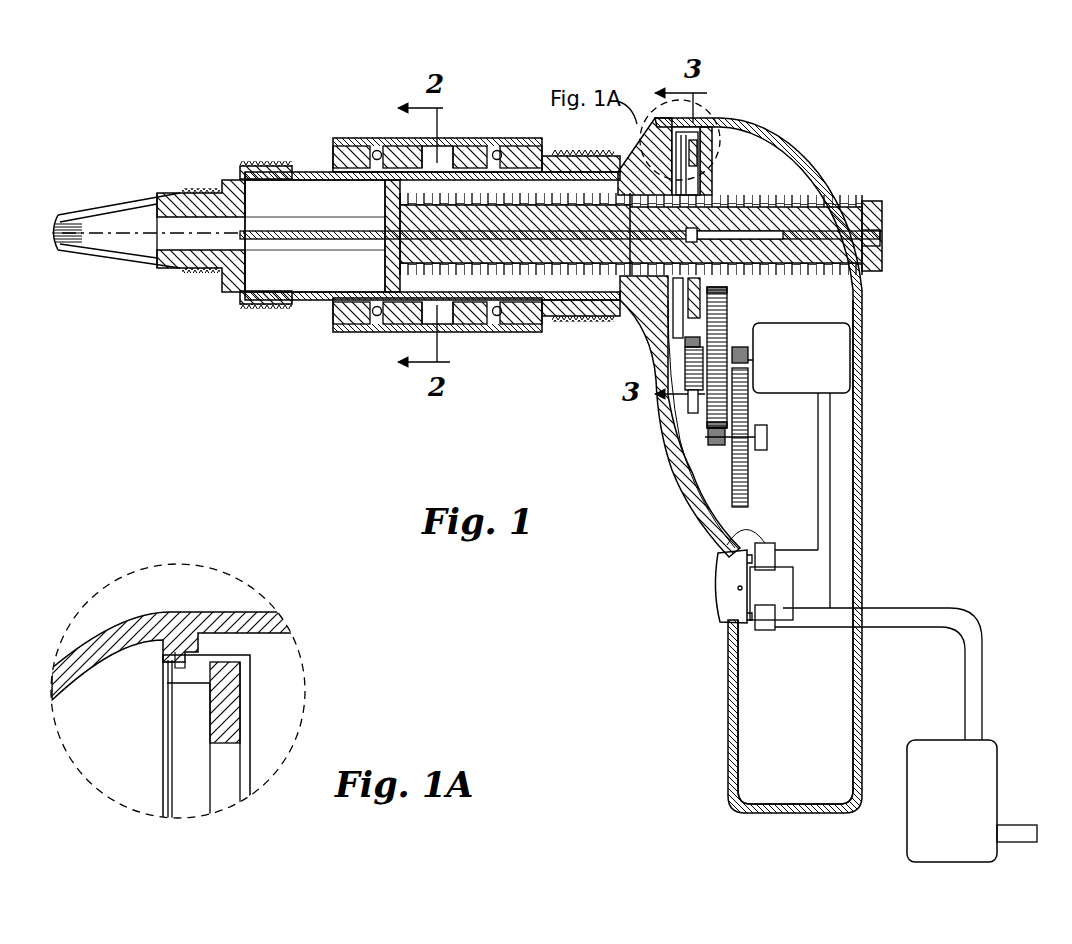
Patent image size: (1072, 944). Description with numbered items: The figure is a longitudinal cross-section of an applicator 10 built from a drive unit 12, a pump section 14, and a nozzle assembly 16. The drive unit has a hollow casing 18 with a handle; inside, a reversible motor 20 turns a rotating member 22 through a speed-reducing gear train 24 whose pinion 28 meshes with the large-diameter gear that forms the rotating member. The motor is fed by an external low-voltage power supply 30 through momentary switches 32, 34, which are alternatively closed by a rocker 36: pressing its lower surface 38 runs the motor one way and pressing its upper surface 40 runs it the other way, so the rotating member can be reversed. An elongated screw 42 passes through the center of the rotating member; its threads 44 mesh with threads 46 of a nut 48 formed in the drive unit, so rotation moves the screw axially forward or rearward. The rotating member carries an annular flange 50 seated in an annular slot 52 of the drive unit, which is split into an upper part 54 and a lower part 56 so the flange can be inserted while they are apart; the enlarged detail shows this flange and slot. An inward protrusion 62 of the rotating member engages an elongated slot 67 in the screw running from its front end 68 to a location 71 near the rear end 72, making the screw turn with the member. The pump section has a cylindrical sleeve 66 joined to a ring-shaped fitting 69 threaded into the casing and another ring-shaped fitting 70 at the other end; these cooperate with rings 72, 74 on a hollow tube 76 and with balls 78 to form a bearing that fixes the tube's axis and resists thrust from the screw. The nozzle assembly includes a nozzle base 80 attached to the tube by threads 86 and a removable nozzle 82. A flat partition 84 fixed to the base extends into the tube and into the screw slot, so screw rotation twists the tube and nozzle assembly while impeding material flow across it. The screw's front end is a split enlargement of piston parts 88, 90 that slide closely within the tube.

In FIG. 1, the applicator 10 is at (400, 393).
In FIG. 1, the drive unit 12 is at (808, 126).
In FIG. 1, the pump section 14 is at (452, 122).
In FIG. 1, the nozzle assembly 16 is at (193, 293).
In FIG. 1, the hollow casing 18 is at (867, 528).
In FIG. 1, the reversible motor 20 is at (801, 465).
In FIG. 1, the rotating member 22 is at (701, 154).
In FIG. 1, the speed-reducing gear train 24 is at (760, 469).
In FIG. 1, the pinion 28 is at (714, 452).
In FIG. 1, the power supply 30 is at (980, 680).
In FIG. 1, the momentary switch 32 is at (727, 541).
In FIG. 1, the momentary switch 34 is at (767, 632).
In FIG. 1, the rocker 36 is at (720, 632).
In FIG. 1, the lower surface 38 is at (720, 604).
In FIG. 1, the upper surface 40 is at (720, 574).
In FIG. 1, the elongated screw 42 is at (868, 222).
In FIG. 1, the threads 44 is at (553, 194).
In FIG. 1, the threads 46 is at (652, 302).
In FIG. 1, the nut 48 is at (640, 150).
In FIG. 1, the annular flange 50 is at (694, 118).
In FIG. 1A, the annular flange 50 is at (198, 690).
In FIG. 1A, the annular slot 52 is at (152, 662).
In FIG. 1, the upper part 54 is at (645, 120).
In FIG. 1, the lower part 56 is at (667, 434).
In FIG. 1, the protrusion 62 is at (748, 264).
In FIG. 1, the cylindrical sleeve 66 is at (513, 332).
In FIG. 1, the elongated slot 67 is at (750, 236).
In FIG. 1, the front end 68 is at (387, 218).
In FIG. 1, the ring-shaped fitting 69 is at (547, 314).
In FIG. 1, the ring-shaped fitting 70 is at (330, 314).
In FIG. 1, the location near rear end 71 is at (880, 256).
In FIG. 1, the ring 72 is at (416, 150).
In FIG. 1, the ring 74 is at (470, 152).
In FIG. 1, the hollow tube 76 is at (310, 296).
In FIG. 1, the balls 78 is at (362, 146).
In FIG. 1, the nozzle base 80 is at (233, 182).
In FIG. 1, the nozzle 82 is at (130, 203).
In FIG. 1, the partition 84 is at (257, 241).
In FIG. 1, the threads 86 is at (262, 168).
In FIG. 1, the piston part 88 is at (385, 186).
In FIG. 1, the piston part 90 is at (387, 263).